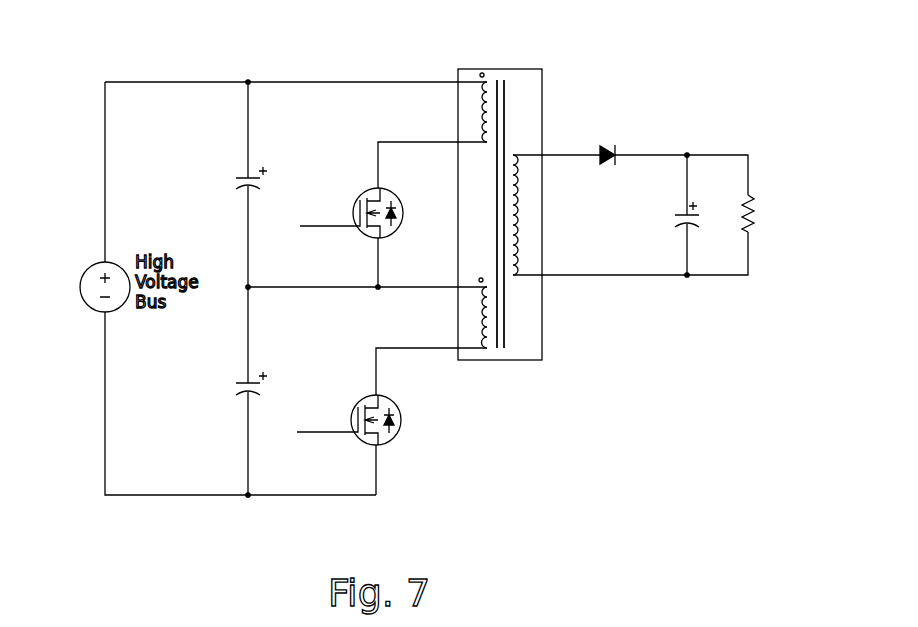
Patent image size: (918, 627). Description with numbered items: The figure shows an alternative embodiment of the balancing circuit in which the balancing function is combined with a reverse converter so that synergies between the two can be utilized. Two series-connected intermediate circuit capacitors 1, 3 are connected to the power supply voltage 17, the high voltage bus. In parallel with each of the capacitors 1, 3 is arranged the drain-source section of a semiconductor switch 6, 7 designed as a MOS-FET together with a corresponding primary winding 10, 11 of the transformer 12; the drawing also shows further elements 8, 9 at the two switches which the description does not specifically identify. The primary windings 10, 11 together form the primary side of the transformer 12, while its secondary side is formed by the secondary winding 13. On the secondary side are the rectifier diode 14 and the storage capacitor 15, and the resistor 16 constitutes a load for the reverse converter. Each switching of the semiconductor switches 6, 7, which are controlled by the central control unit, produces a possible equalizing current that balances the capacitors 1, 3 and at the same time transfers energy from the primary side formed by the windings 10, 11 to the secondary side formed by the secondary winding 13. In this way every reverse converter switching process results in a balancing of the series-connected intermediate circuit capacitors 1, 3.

The intermediate circuit capacitor 1 is at (245, 178).
The intermediate circuit capacitor 3 is at (245, 383).
The semiconductor switch 6 is at (365, 195).
The semiconductor switch 7 is at (360, 400).
The body diode of upper transistor 8 is at (395, 221).
The body diode of lower transistor 9 is at (393, 418).
The primary winding 10 is at (503, 98).
The primary winding 11 is at (490, 312).
The transformer 12 is at (505, 140).
The secondary winding 13 is at (512, 232).
The rectifier diode 14 is at (612, 144).
The storage capacitor 15 is at (685, 208).
The resistor 16 is at (757, 205).
The power supply voltage 17 is at (100, 265).